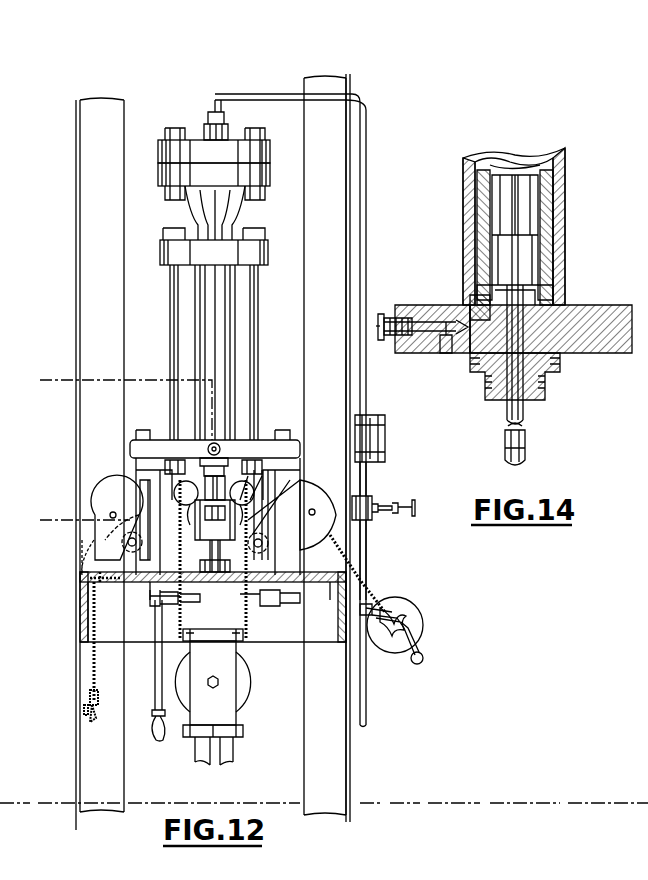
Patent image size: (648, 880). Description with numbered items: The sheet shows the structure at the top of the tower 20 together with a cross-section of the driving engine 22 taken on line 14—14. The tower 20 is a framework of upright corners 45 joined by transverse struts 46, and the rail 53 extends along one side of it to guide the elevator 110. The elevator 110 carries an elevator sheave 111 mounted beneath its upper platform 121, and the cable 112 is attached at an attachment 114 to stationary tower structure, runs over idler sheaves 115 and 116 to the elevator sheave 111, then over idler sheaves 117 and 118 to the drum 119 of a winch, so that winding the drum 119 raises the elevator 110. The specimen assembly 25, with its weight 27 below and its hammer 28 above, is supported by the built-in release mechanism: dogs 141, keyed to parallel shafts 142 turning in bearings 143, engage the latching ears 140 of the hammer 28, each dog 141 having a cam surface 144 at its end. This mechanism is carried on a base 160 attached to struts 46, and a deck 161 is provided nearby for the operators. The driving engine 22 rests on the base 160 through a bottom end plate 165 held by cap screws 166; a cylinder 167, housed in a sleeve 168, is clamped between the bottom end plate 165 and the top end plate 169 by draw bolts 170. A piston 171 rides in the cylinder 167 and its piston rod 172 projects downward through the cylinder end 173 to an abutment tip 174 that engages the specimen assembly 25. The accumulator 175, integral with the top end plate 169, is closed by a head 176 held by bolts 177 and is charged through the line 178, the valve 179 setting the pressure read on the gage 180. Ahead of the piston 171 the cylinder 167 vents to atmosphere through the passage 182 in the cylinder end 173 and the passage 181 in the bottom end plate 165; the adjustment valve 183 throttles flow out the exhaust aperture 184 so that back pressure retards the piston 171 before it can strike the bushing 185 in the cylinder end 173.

In FIG. 12, the section line 14— 14 is at (32, 380).
In FIG. 12, the tower 20 is at (72, 358).
In FIG. 14, the tower 20 is at (645, 430).
In FIG. 12, the driving engine 22 is at (262, 300).
In FIG. 14, the driving engine 22 is at (568, 190).
In FIG. 12, the specimen assembly 25 is at (200, 560).
In FIG. 12, the weight 27 is at (230, 600).
In FIG. 12, the hammer or tup 28 is at (222, 500).
In FIG. 12, the upright corners 45 is at (345, 756).
In FIG. 12, the transverse struts 46 is at (82, 600).
In FIG. 12, the rail 53 is at (196, 762).
In FIG. 12, the elevator 110 is at (262, 683).
In FIG. 12, the elevator sheave 111 is at (240, 702).
In FIG. 12, the cable 112 is at (250, 638).
In FIG. 12, the attachment 114 is at (94, 708).
In FIG. 12, the idler sheave 115 is at (100, 500).
In FIG. 12, the idler sheave 116 is at (118, 548).
In FIG. 12, the idler sheave 117 is at (365, 490).
In FIG. 12, the idler sheave 118 is at (300, 540).
In FIG. 12, the drum 119 is at (424, 613).
In FIG. 12, the upper platform 121 is at (200, 636).
In FIG. 12, the latching ears 140 is at (240, 496).
In FIG. 12, the dogs 141 is at (118, 506).
In FIG. 12, the parallel shafts 142 is at (144, 490).
In FIG. 12, the bearings 143 is at (176, 488).
In FIG. 12, the cam surface 144 is at (262, 498).
In FIG. 12, the base 160 is at (88, 577).
In FIG. 12, the deck 161 is at (416, 803).
In FIG. 12, the bottom end plate 165 is at (150, 446).
In FIG. 14, the bottom end plate 165 is at (608, 312).
In FIG. 12, the cap screws 166 is at (142, 430).
In FIG. 14, the cylinder 167 is at (556, 212).
In FIG. 12, the sleeve 168 is at (213, 303).
In FIG. 14, the sleeve 168 is at (556, 242).
In FIG. 12, the top end plate 169 is at (178, 252).
In FIG. 12, the draw bolts 170 is at (257, 326).
In FIG. 14, the piston 171 is at (510, 247).
In FIG. 12, the piston rod 172 is at (250, 460).
In FIG. 14, the piston rod 172 is at (530, 414).
In FIG. 14, the cylinder end 173 is at (550, 380).
In FIG. 14, the abutment tip 174 is at (520, 464).
In FIG. 12, the accumulator 175 is at (240, 210).
In FIG. 12, the head 176 is at (200, 125).
In FIG. 12, the bolts 177 is at (178, 131).
In FIG. 12, the line 178 is at (366, 140).
In FIG. 12, the valve 179 is at (413, 504).
In FIG. 12, the gage 180 is at (370, 430).
In FIG. 14, the passage 181 is at (442, 315).
In FIG. 14, the passage 182 is at (482, 300).
In FIG. 12, the adjustment valve 183 is at (208, 449).
In FIG. 14, the adjustment valve 183 is at (384, 318).
In FIG. 14, the exhaust aperture 184 is at (448, 348).
In FIG. 14, the bushing 185 is at (550, 294).